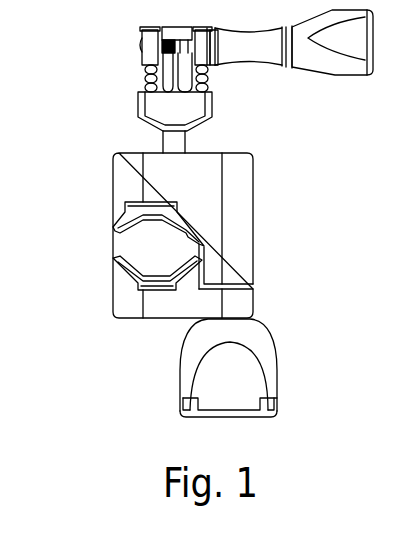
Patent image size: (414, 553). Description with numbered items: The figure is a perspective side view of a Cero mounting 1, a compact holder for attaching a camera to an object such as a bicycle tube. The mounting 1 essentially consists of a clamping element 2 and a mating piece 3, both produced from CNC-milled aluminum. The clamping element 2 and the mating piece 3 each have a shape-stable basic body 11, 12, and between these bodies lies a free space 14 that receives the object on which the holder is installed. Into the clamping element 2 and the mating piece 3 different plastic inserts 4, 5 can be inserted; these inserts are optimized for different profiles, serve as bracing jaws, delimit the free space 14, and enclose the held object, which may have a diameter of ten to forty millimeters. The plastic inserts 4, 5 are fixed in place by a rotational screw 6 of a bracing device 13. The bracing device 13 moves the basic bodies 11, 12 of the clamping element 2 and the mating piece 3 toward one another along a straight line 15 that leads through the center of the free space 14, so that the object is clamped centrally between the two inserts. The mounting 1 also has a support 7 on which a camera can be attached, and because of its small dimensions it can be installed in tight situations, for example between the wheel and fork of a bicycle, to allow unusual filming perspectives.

The mounting 1 is at (304, 176).
The clamping element 2 is at (243, 205).
The mating piece 3 is at (243, 303).
The plastic insert 4 is at (132, 239).
The plastic insert 5 is at (113, 263).
The rotational screw 6 is at (262, 359).
The support 7 is at (230, 82).
The basic body 11 is at (148, 163).
The basic body 12 is at (122, 310).
The bracing device 13 is at (292, 408).
The free space 14 is at (170, 245).
The straight line 15 is at (140, 247).